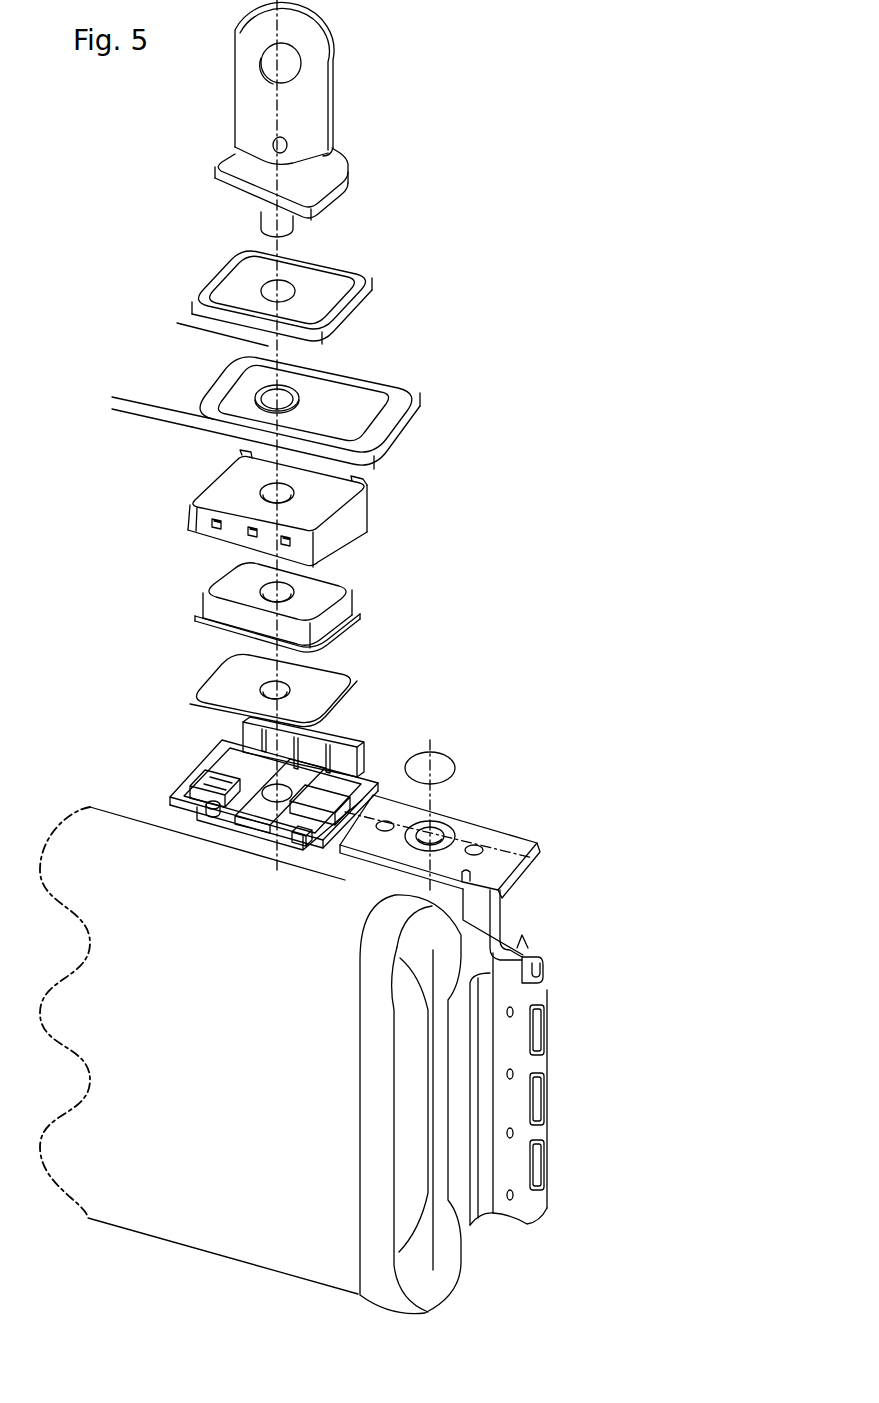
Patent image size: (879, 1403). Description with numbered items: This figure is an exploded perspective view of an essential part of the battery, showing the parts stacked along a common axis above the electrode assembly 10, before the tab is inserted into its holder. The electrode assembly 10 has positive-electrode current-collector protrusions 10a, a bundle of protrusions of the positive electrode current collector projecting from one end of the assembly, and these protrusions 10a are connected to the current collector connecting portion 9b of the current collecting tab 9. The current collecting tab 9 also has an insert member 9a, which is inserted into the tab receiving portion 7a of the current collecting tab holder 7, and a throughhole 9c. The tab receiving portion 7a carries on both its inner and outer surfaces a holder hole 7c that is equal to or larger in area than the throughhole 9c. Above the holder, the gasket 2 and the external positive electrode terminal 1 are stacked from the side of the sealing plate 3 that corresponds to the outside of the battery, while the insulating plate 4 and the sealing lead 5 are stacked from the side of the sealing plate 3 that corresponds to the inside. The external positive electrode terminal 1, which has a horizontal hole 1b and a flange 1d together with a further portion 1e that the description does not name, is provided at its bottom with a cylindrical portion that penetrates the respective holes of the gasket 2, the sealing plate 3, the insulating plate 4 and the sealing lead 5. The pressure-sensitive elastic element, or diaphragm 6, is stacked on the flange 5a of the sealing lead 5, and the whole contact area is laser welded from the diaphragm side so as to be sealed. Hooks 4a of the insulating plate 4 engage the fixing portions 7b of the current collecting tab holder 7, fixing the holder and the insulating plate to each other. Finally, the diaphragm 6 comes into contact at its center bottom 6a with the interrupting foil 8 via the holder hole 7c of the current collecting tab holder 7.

The external positive electrode terminal 1 is at (345, 108).
The horizontal hole 1b is at (273, 152).
The flange 1d is at (252, 197).
The pin 1e is at (262, 222).
The gasket 2 is at (378, 294).
The sealing plate 3 is at (418, 426).
The insulating plate 4 is at (380, 528).
The hooks 4a is at (214, 532).
The sealing lead 5 is at (360, 630).
The flange 5a is at (198, 627).
The pressure-sensitive elastic element (diaphragm) 6 is at (360, 695).
The center bottom 6a is at (262, 690).
The current collecting tab holder 7 is at (350, 742).
The tab receiving portion 7a is at (305, 838).
The fixing portions 7b is at (209, 806).
The holder hole 7c is at (263, 785).
The interrupting foil 8 is at (462, 768).
The current collecting tab 9 is at (557, 888).
The insert member 9a is at (503, 850).
The current collector connecting portion 9b is at (545, 990).
The throughhole 9c is at (418, 850).
The electrode assembly 10 is at (330, 1076).
The positive-electrode current-collector protrusions 10a is at (410, 1113).